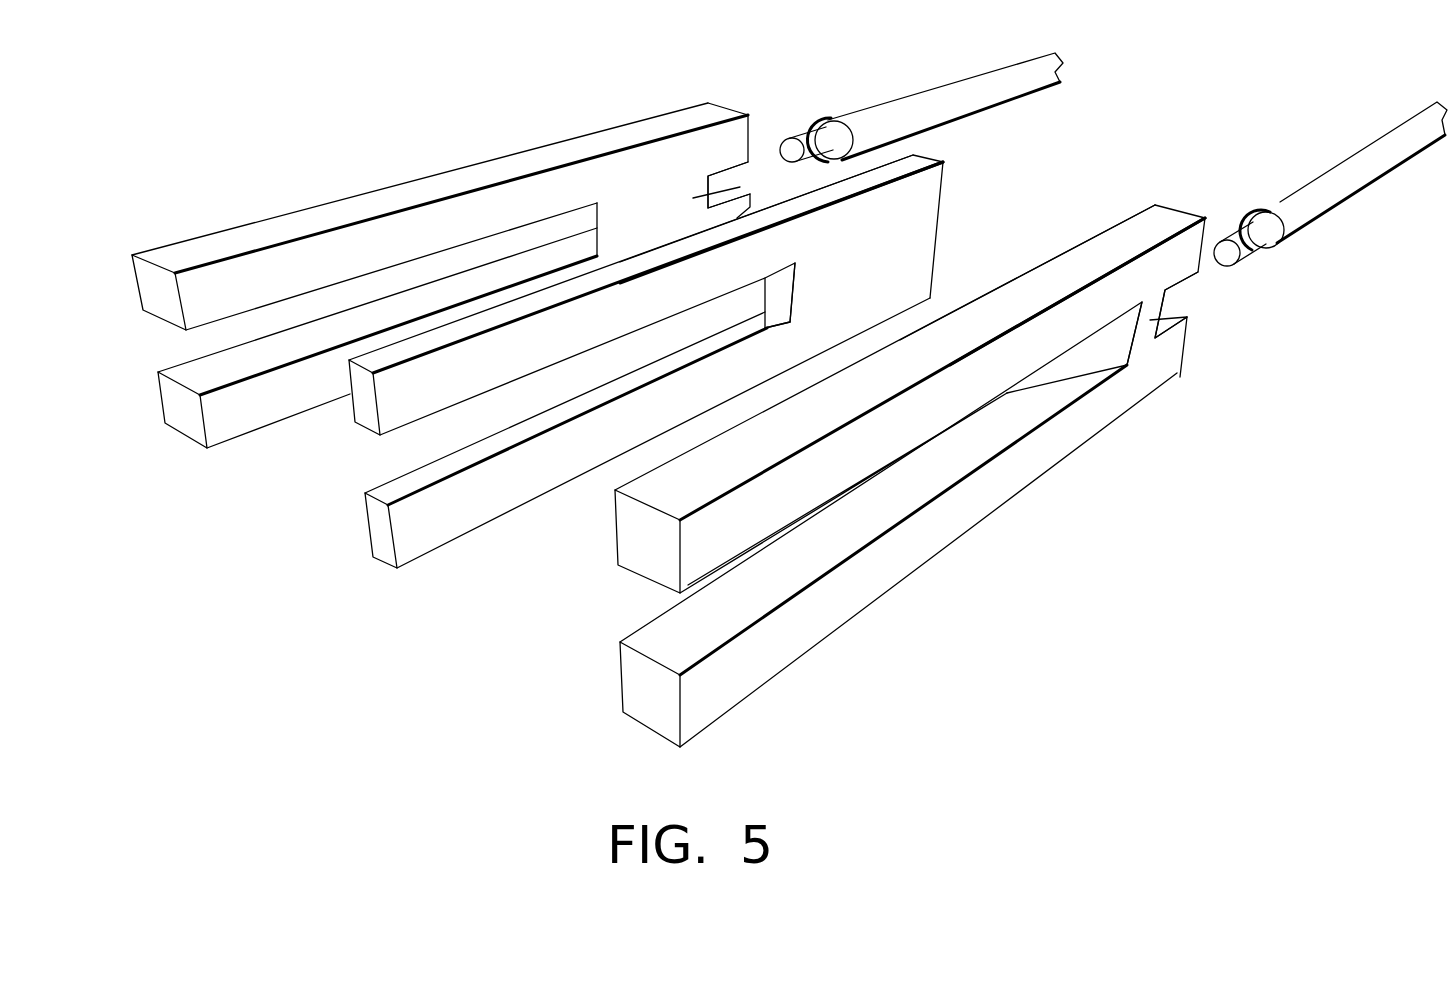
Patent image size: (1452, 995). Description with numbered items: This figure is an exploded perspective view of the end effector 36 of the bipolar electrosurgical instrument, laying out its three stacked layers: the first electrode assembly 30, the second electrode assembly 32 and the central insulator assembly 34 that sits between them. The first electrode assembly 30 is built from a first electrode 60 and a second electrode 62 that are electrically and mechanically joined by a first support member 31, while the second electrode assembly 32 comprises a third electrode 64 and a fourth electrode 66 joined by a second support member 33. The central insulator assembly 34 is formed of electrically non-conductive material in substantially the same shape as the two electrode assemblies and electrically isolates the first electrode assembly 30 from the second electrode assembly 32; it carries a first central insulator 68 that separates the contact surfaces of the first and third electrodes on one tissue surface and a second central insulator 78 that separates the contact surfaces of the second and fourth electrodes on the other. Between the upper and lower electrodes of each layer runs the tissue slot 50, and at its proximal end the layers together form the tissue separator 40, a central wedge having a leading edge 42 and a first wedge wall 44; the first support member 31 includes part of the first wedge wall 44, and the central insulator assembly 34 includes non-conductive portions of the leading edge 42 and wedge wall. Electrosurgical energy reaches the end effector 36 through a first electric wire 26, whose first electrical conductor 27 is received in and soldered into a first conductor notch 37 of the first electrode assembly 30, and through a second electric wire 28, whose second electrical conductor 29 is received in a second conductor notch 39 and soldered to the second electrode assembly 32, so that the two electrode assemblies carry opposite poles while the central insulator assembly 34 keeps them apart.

The first electric wire 26 is at (1362, 162).
The first electrical conductor 27 is at (1245, 247).
The second electric wire 28 is at (1005, 75).
The second electrical conductor 29 is at (814, 138).
The first electrode assembly 30 is at (1148, 377).
The first support member 31 is at (1150, 320).
The second electrode assembly 32 is at (660, 162).
The second support member 33 is at (718, 190).
The central insulator assembly 34 is at (874, 247).
The end effector 36 is at (483, 674).
The first conductor notch 37 is at (1178, 300).
The second conductor notch 39 is at (737, 178).
The tissue separator 40 is at (773, 326).
The leading edge 42 is at (763, 298).
The first wedge wall 44 is at (785, 290).
The tissue slot 50 is at (370, 456).
The first electrode 60 is at (728, 553).
The second electrode 62 is at (728, 702).
The third electrode 64 is at (233, 302).
The fourth electrode 66 is at (254, 421).
The first central insulator 68 is at (429, 404).
The second central insulator 78 is at (459, 529).